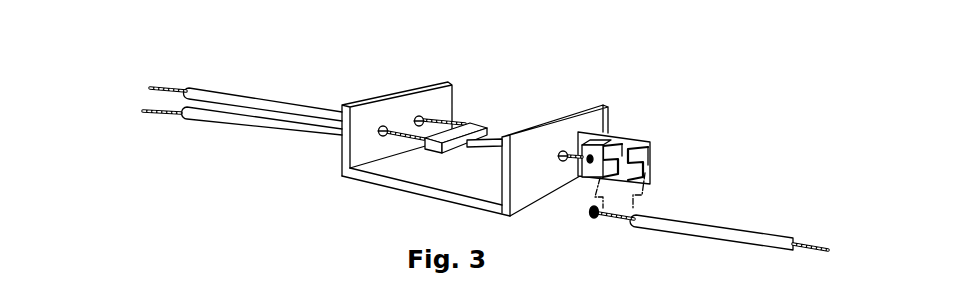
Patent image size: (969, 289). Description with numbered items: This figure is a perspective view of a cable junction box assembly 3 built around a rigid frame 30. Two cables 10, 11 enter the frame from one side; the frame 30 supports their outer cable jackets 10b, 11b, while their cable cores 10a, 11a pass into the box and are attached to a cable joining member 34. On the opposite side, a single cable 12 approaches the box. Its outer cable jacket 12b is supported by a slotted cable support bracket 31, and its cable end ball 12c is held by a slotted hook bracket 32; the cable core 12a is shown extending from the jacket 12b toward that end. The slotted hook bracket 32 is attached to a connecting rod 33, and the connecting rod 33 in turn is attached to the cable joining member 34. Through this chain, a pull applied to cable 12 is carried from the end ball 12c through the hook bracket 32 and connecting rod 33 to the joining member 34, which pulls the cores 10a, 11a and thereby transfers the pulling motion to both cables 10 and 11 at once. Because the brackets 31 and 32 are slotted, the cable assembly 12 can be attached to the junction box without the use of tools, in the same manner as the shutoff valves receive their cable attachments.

The cable junction box assembly 3 is at (503, 120).
The cable 10 is at (248, 77).
The cable core 10a is at (178, 88).
The outer cable jacket 10b is at (216, 98).
The cable 11 is at (223, 157).
The cable core 11a is at (164, 115).
The outer cable jacket 11b is at (227, 121).
The cable 12 is at (725, 228).
The cable core 12a is at (807, 251).
The outer cable jacket 12b is at (704, 229).
The cable end ball 12c is at (596, 219).
The rigid frame 30 is at (397, 190).
The slotted cable support bracket 31 is at (646, 146).
The slotted hook bracket 32 is at (616, 138).
The connecting rod 33 is at (499, 138).
The cable joining member 34 is at (477, 120).